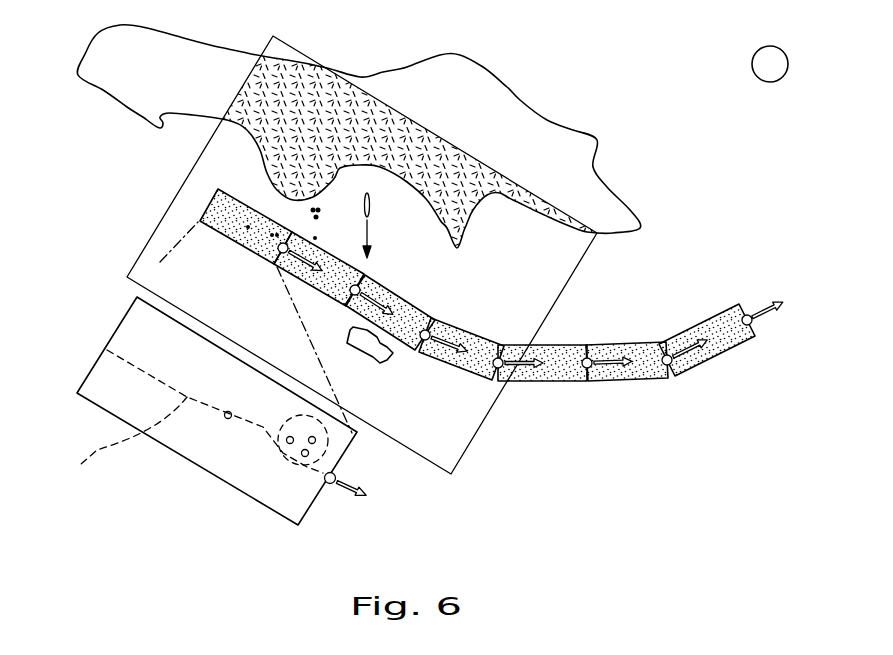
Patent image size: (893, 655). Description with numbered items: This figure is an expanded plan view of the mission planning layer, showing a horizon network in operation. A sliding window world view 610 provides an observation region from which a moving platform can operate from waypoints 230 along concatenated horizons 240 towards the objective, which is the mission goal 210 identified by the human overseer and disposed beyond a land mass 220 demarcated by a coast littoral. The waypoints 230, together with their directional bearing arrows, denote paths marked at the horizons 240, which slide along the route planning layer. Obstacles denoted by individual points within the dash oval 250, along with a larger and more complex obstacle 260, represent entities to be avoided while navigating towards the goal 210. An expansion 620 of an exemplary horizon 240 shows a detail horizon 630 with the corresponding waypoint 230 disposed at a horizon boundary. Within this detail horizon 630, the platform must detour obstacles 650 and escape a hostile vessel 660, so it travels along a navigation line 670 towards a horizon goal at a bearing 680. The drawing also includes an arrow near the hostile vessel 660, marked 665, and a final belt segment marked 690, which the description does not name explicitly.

The mission goal 210 is at (752, 62).
The land mass 220 is at (507, 85).
The waypoints 230 is at (413, 306).
The horizons 240 is at (607, 384).
The dash oval 250 is at (370, 426).
The complex obstacle 260 is at (390, 360).
The sliding window world view 610 is at (116, 178).
The expansion 620 is at (225, 291).
The detail horizon 630 is at (335, 483).
The obstacles 650 is at (228, 420).
The hostile vessel 660 is at (372, 200).
The flow direction 665 is at (370, 250).
The navigation line 670 is at (183, 424).
The bearing 680 is at (343, 480).
The end segment 690 is at (716, 361).